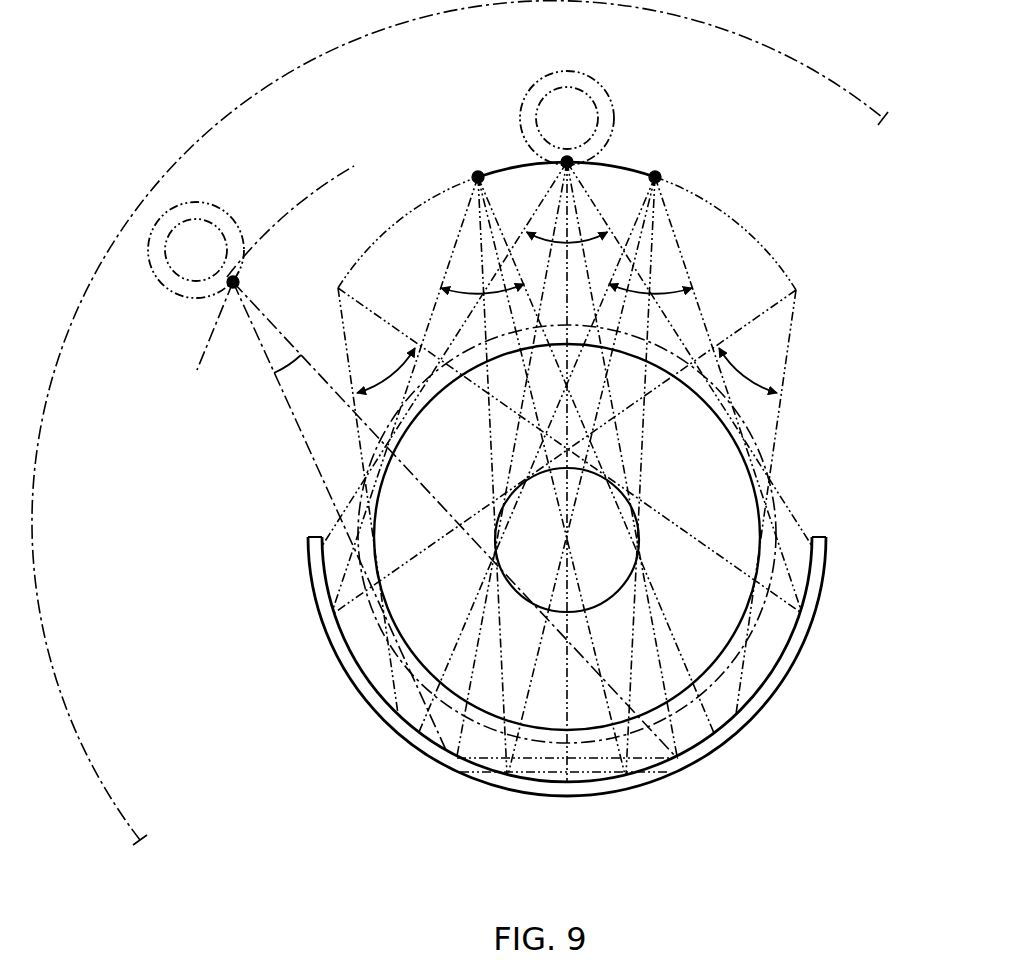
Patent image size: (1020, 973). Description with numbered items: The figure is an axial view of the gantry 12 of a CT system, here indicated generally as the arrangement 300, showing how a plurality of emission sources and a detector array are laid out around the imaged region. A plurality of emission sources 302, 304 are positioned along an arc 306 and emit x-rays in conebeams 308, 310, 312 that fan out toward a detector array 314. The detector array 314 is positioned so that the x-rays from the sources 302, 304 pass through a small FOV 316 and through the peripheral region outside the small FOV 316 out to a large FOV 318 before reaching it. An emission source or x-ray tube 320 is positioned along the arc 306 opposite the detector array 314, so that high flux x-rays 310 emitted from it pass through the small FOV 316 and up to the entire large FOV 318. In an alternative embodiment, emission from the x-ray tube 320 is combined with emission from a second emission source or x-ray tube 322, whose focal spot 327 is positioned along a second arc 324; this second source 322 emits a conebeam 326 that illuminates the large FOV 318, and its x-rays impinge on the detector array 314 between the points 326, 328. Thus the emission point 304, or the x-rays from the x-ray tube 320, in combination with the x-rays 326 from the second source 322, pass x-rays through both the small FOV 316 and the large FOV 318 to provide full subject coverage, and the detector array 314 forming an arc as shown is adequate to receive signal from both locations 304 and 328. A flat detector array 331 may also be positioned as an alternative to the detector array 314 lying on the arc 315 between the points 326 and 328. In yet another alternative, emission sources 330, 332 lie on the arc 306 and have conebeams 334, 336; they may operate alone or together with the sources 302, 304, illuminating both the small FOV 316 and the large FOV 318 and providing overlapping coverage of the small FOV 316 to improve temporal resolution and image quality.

The gantry 12 is at (836, 85).
The imaging system 300 is at (852, 213).
The emission source 302 is at (476, 174).
The emission source 304 is at (575, 163).
The arc 306 is at (515, 165).
The conebeam 308 is at (666, 292).
The conebeam 310 is at (578, 234).
The conebeam 312 is at (468, 292).
The detector array 314 is at (802, 636).
The arc 315 is at (784, 678).
The small FOV 316 is at (567, 613).
The large FOV 318 is at (688, 718).
The x-ray tube 320 is at (555, 76).
The second x-ray tube 322 is at (200, 204).
The second arc 324 is at (306, 194).
The conebeam 326 is at (292, 395).
The focal spot 327 is at (233, 288).
The point 328 is at (684, 765).
The emission source 330 is at (797, 289).
The flat detector array 331 is at (558, 774).
The emission source 332 is at (337, 287).
The conebeam 334 is at (749, 378).
The conebeam 336 is at (385, 378).